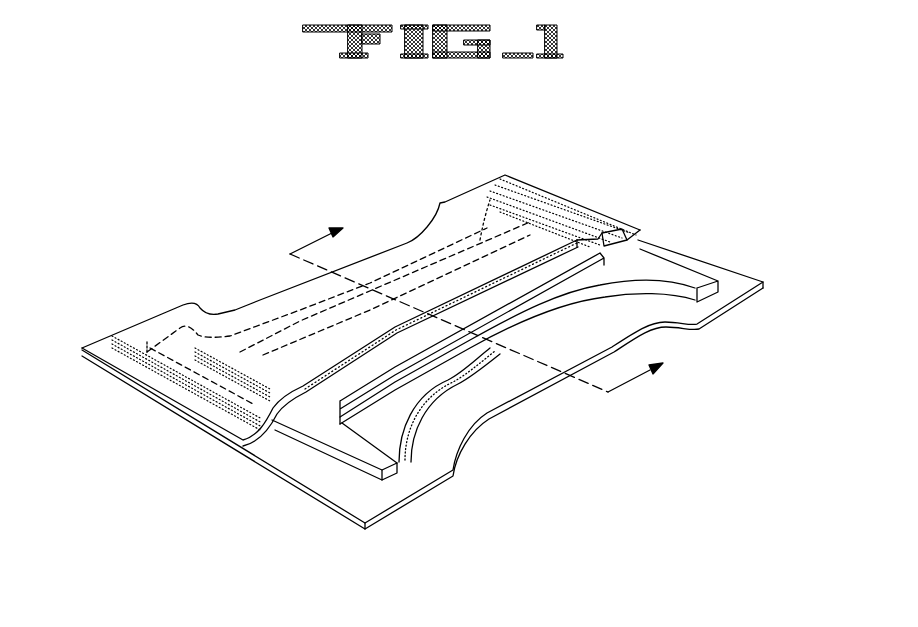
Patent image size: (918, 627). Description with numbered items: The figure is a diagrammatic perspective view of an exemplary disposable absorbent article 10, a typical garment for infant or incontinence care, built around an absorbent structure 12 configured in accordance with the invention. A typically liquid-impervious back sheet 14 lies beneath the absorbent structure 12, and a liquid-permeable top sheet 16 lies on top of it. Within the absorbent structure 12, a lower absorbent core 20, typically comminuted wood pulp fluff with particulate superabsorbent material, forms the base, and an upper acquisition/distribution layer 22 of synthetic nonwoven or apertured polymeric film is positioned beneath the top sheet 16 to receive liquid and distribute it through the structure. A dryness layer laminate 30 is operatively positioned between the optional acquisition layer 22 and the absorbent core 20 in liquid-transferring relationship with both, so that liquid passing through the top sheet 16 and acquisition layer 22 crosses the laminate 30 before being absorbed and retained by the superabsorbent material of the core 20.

The absorbent article 10 is at (257, 295).
The absorbent structure 12 is at (620, 252).
The back sheet 14 is at (350, 493).
The top sheet 16 is at (538, 242).
The absorbent core 20 is at (647, 265).
The acquisition/distribution layer 22 is at (352, 387).
The dryness layer laminate 30 is at (366, 400).